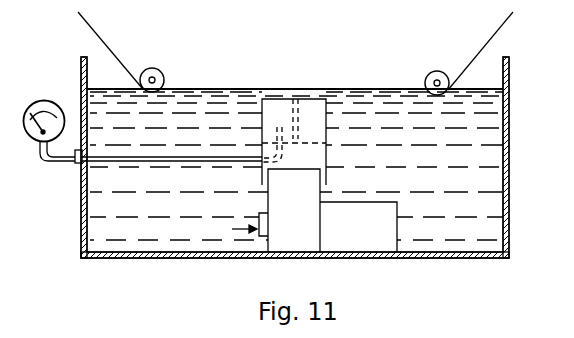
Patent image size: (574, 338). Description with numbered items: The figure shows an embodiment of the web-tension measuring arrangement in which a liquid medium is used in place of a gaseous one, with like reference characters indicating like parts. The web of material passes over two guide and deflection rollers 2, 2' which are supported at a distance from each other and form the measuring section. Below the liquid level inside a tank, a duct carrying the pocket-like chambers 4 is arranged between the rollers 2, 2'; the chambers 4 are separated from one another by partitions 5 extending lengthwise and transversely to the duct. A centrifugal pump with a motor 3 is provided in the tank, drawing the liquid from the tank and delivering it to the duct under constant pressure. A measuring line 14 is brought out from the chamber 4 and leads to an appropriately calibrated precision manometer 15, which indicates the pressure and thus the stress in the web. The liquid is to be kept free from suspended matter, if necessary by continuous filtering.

The guide and deflection roller 2 is at (152, 61).
The guide and deflection roller 2' is at (437, 64).
The centrifugal pump with motor 3 is at (310, 179).
The pocket-like chamber 4 is at (325, 123).
The partition 5 is at (293, 114).
The measuring line 14 is at (107, 162).
The precision manometer 15 is at (46, 100).